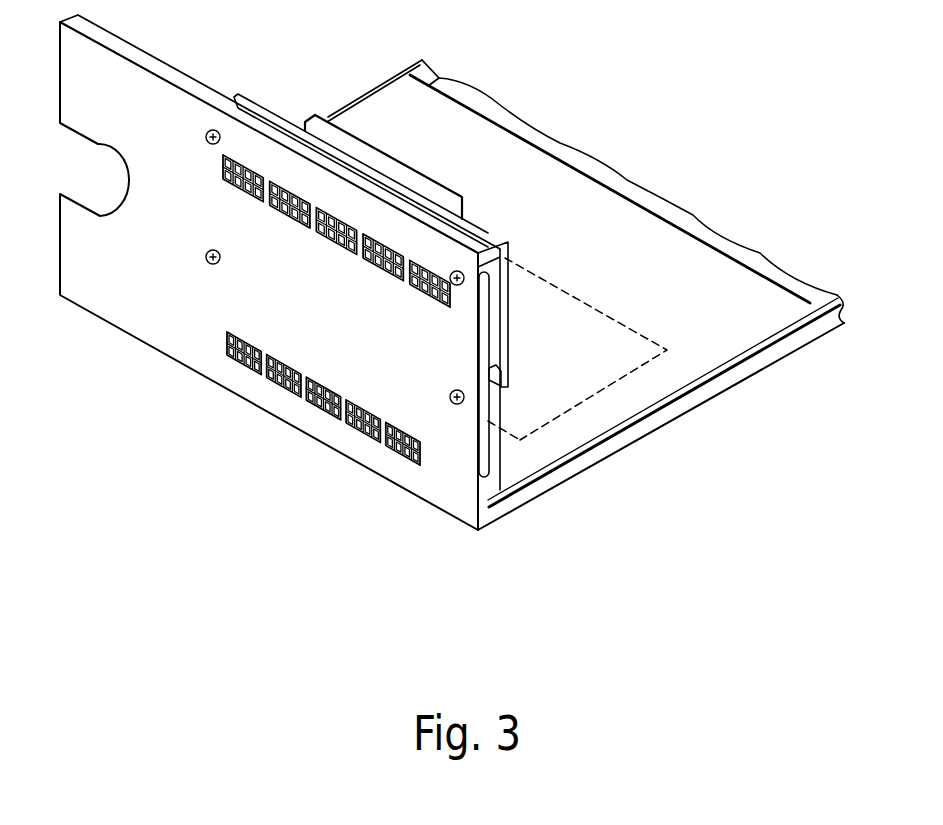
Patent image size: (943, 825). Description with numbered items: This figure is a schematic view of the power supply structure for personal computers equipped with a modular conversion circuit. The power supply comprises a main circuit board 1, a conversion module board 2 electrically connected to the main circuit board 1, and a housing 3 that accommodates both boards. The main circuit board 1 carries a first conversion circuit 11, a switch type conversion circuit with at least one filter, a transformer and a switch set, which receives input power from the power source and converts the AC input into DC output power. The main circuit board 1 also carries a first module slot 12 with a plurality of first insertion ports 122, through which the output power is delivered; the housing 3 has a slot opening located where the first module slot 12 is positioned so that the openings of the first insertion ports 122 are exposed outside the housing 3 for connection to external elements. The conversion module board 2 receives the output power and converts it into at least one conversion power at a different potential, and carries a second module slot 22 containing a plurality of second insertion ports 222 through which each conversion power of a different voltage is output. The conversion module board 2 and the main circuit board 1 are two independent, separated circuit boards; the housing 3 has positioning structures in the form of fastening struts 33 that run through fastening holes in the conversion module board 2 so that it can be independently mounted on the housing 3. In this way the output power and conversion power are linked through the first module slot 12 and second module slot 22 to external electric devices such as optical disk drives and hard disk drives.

The main circuit board 1 is at (651, 237).
The first conversion circuit 11 is at (620, 380).
The first module slot 12 is at (313, 425).
The first insertion ports 122 is at (343, 424).
The conversion module board 2 is at (492, 240).
The second module slot 22 is at (336, 174).
The second insertion ports 222 is at (287, 188).
The housing 3 is at (447, 498).
The fastening struts 33 is at (495, 380).